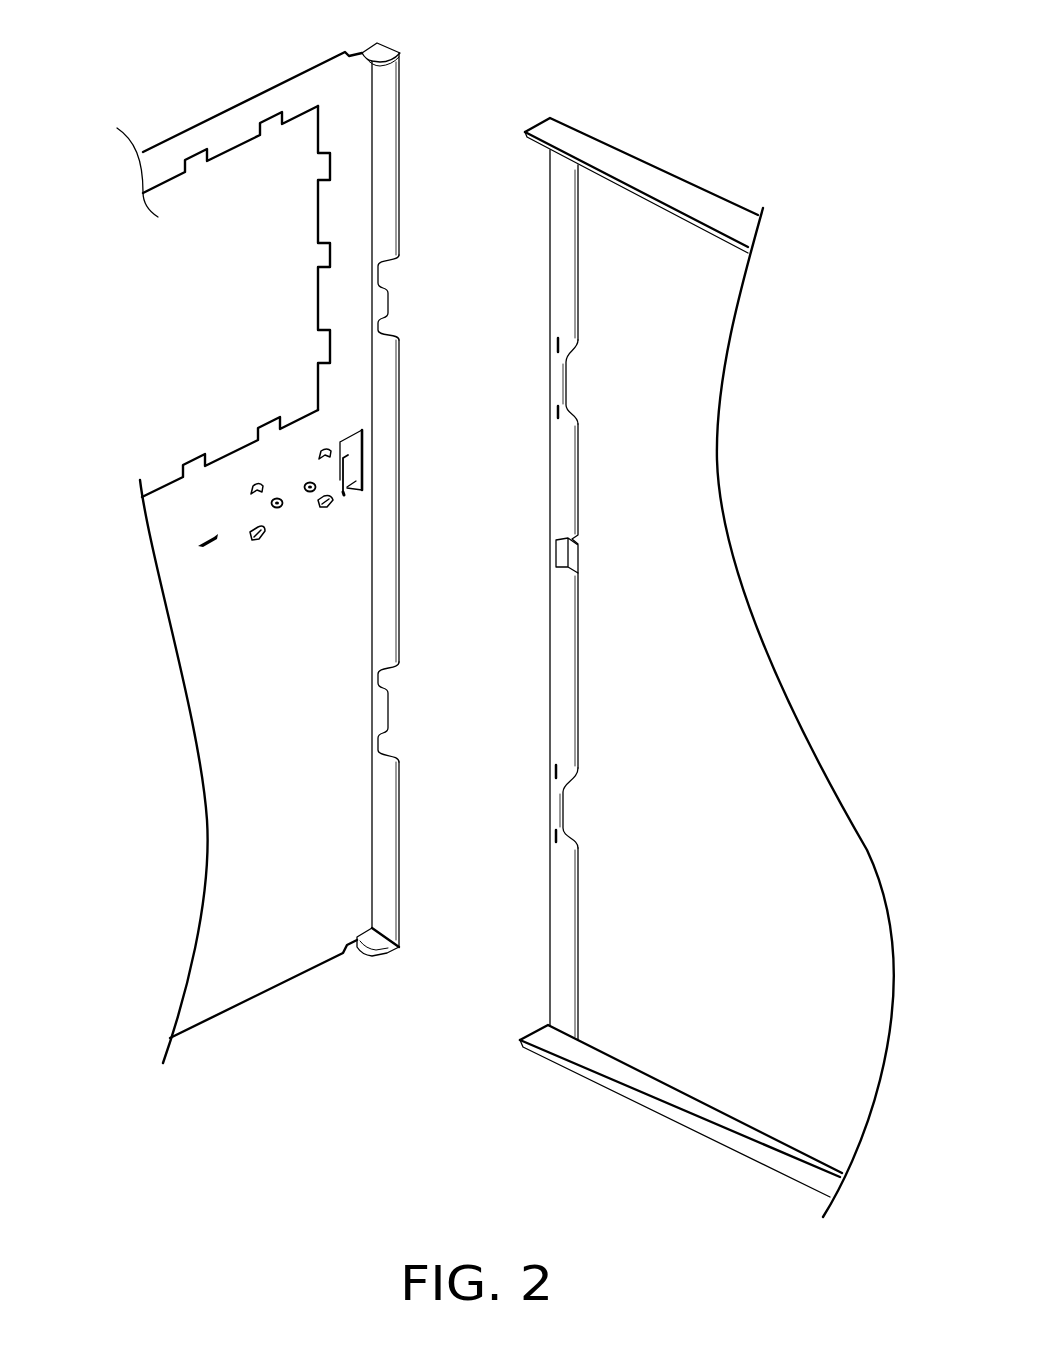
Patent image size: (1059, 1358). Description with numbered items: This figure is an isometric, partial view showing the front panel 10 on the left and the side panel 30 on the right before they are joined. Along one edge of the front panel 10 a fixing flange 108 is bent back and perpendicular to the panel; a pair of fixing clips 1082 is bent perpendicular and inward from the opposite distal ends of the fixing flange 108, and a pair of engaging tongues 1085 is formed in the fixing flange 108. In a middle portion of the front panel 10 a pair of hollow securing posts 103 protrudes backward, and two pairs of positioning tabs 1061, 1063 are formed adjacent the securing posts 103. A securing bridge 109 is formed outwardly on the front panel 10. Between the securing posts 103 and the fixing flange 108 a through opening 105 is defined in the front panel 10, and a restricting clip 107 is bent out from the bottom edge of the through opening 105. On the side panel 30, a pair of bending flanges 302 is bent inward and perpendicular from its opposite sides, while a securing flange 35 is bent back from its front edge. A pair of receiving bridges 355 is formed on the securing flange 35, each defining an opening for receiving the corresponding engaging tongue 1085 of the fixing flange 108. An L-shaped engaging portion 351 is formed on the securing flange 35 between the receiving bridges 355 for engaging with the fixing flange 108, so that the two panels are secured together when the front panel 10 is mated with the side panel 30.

The front panel 10 is at (252, 958).
The hollow securing posts 103 is at (270, 503).
The through opening 105 is at (355, 440).
The restricting clip 107 is at (363, 477).
The fixing flange 108 is at (436, 500).
The securing bridge 109 is at (205, 543).
The positioning tabs 1061 is at (255, 538).
The positioning tabs 1063 is at (332, 505).
The fixing clips 1082 is at (388, 42).
The engaging tongues 1085 is at (382, 292).
The side panel 30 is at (783, 1110).
The bending flanges 302 is at (665, 182).
The securing flange 35 is at (506, 595).
The L-shaped engaging portion 351 is at (553, 557).
The receiving bridges 355 is at (558, 380).